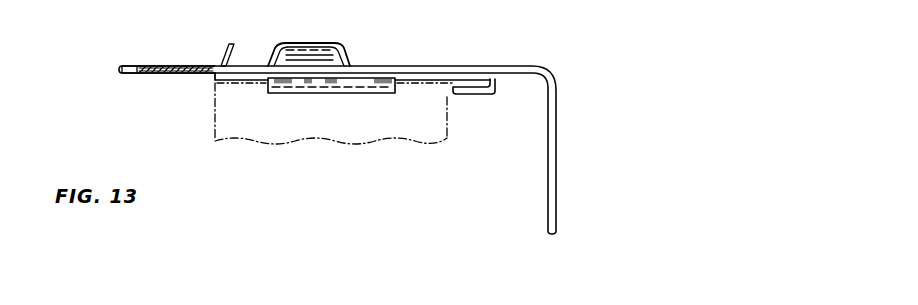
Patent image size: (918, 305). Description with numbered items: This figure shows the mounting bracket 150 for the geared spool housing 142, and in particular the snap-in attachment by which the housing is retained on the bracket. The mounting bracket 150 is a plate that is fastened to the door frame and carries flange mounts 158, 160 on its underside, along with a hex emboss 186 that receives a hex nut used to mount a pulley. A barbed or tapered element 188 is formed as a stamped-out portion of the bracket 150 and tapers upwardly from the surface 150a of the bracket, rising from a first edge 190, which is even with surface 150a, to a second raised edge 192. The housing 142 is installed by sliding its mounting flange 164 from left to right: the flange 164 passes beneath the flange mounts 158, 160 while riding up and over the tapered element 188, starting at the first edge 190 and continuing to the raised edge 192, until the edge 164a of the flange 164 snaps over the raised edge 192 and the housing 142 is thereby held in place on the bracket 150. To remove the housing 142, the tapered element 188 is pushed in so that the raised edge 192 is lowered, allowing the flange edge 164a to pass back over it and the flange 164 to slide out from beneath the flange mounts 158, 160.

The geared spool housing 142 is at (450, 138).
The mounting bracket 150 is at (522, 67).
The surface of bracket 150a is at (121, 72).
The flange mount 158 is at (312, 94).
The flange mount 160 is at (477, 95).
The mounting flange 164 is at (468, 77).
The edge of flange 164a is at (206, 80).
The hex emboss 186 is at (322, 42).
The tapered element 188 is at (178, 76).
The first edge 190 is at (153, 78).
The second raised edge 192 is at (201, 78).